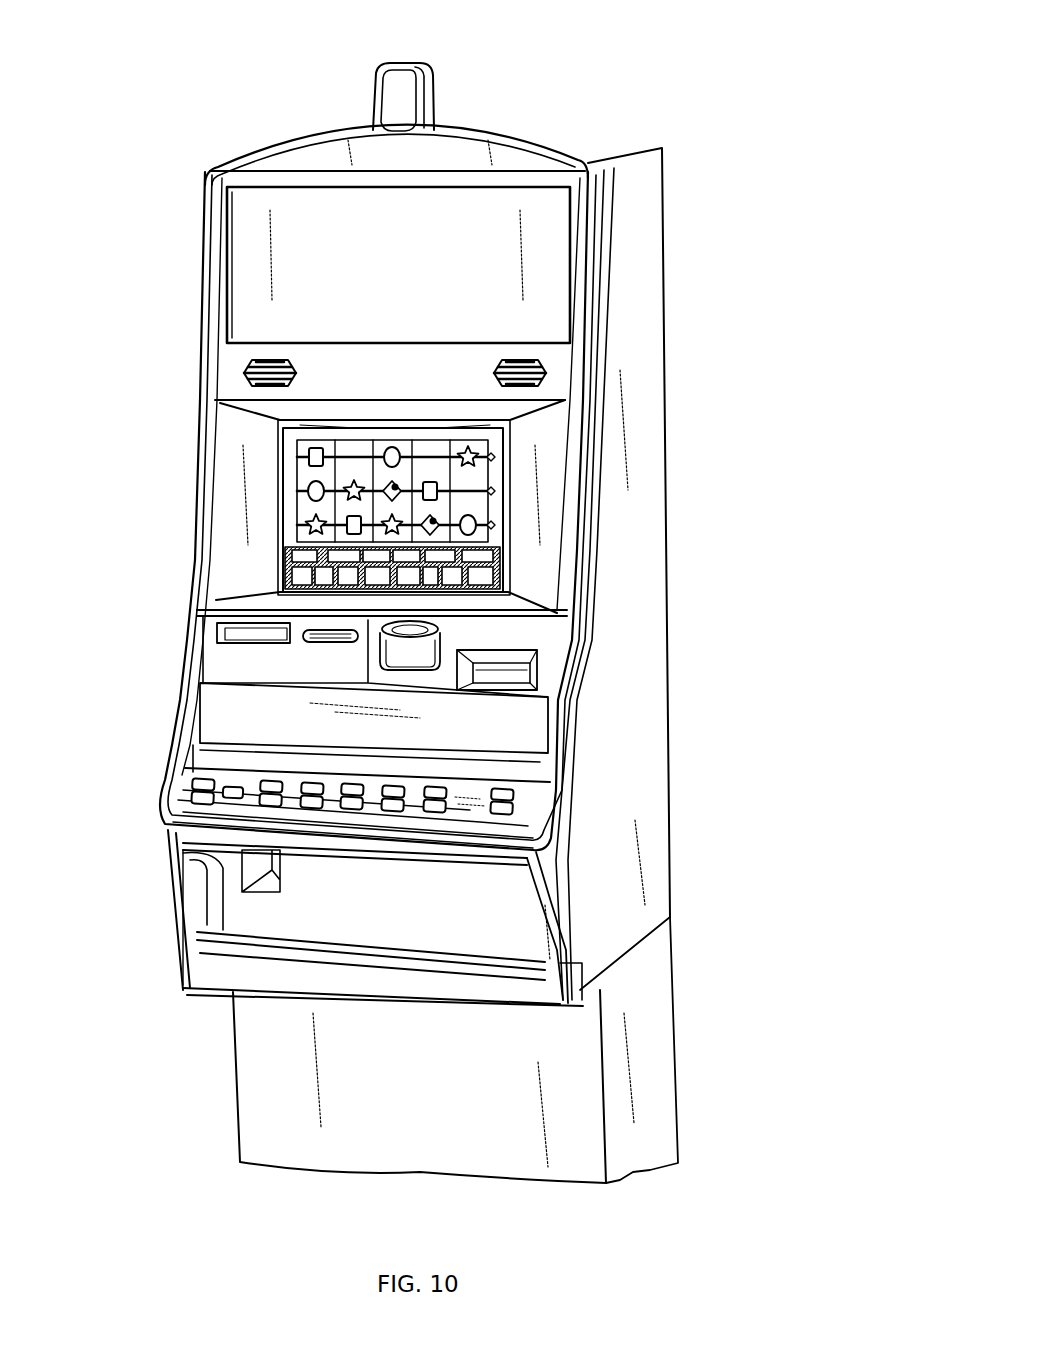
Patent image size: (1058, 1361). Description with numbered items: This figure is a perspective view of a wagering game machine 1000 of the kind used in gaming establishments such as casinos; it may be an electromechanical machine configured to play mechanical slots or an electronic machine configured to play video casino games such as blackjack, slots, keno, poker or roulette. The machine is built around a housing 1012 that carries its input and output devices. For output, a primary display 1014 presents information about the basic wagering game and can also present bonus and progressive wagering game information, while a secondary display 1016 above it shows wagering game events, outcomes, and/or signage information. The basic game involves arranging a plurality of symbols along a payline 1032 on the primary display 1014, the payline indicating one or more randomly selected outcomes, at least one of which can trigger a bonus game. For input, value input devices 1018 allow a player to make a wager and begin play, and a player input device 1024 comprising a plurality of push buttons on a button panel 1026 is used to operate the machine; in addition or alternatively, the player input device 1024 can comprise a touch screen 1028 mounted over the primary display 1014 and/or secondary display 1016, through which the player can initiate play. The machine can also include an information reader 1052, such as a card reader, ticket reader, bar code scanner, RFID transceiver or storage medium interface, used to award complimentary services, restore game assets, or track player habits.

The wagering game machine 1000 is at (176, 30).
The housing 1012 is at (655, 225).
The primary display 1014 is at (272, 512).
The secondary display 1016 is at (270, 258).
The value input device 1018 is at (443, 632).
The player input device 1024 is at (530, 795).
The button panel 1026 is at (178, 832).
The touch screen 1028 is at (510, 576).
The payline 1032 is at (300, 460).
The information reader 1052 is at (300, 637).